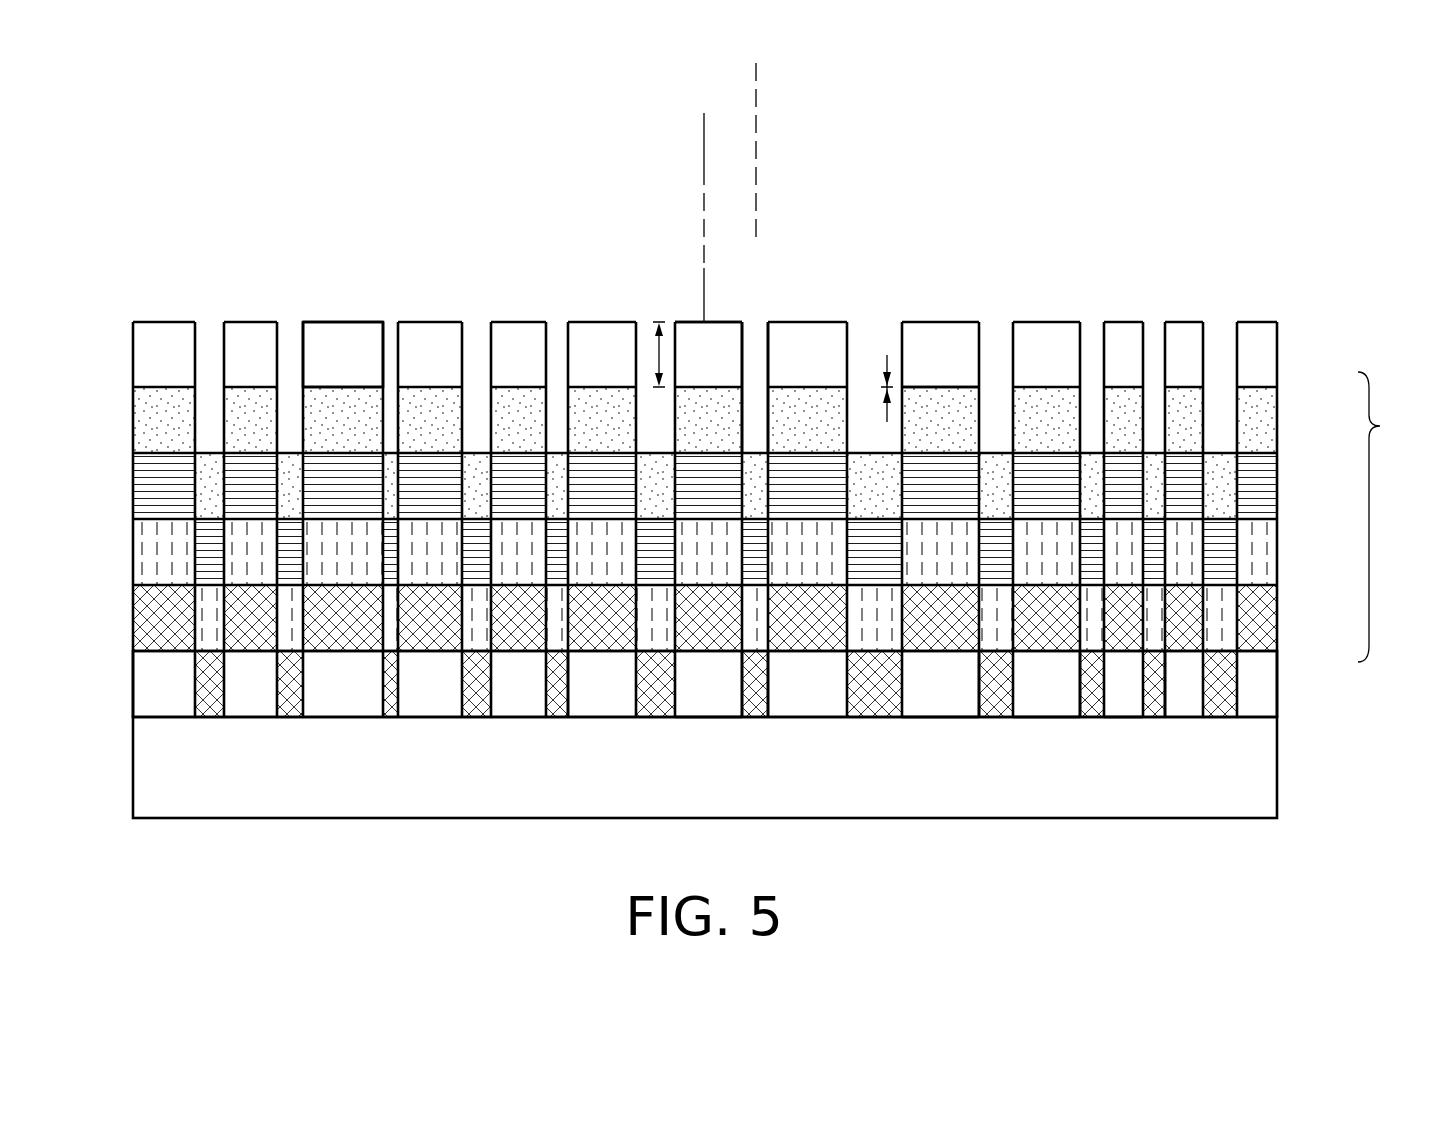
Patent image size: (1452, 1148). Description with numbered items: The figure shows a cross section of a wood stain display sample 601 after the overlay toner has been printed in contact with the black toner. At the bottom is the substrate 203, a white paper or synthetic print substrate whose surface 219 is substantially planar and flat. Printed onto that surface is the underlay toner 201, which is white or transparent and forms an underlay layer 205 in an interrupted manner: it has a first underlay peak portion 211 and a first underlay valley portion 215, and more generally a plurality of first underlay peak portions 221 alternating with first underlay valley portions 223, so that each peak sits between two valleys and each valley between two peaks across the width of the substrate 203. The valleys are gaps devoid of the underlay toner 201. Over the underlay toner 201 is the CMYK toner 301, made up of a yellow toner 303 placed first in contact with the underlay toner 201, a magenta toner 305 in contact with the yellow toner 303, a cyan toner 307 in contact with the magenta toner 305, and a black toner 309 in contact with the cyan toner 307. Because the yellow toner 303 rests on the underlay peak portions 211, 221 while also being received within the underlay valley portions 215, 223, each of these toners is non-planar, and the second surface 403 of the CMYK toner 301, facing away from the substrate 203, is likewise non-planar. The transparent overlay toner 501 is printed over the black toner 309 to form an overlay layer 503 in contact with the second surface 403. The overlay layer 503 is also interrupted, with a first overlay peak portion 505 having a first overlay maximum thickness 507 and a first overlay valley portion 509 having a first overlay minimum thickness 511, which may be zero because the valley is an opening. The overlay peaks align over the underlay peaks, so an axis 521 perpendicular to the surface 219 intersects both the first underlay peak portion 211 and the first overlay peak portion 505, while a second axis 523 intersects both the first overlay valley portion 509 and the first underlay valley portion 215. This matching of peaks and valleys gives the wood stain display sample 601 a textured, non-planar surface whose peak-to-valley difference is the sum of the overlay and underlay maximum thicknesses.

The underlay toner 201 is at (597, 707).
The substrate 203 is at (1145, 805).
The underlay layer 205 is at (1292, 688).
The first underlay peak portion 211 is at (690, 707).
The first underlay valley portion 215 is at (751, 712).
The surface of the substrate 219 is at (794, 710).
The first underlay peak portions 221 is at (920, 707).
The first underlay valley portions 223 is at (991, 711).
The CMYK toner 301 is at (1397, 517).
The yellow toner 303 is at (1262, 620).
The magenta toner 305 is at (1265, 553).
The cyan toner 307 is at (1262, 484).
The black toner 309 is at (1270, 422).
The second surface 403 is at (928, 378).
The overlay toner 501 is at (340, 328).
The overlay layer 503 is at (1296, 358).
The first overlay peak portion 505 is at (724, 327).
The first overlay maximum thickness 507 is at (657, 357).
The first overlay valley portion 509 is at (764, 316).
The first overlay minimum thickness 511 is at (887, 357).
The axis 521 is at (702, 207).
The second axis 523 is at (760, 100).
The wood stain display sample 601 is at (1216, 174).